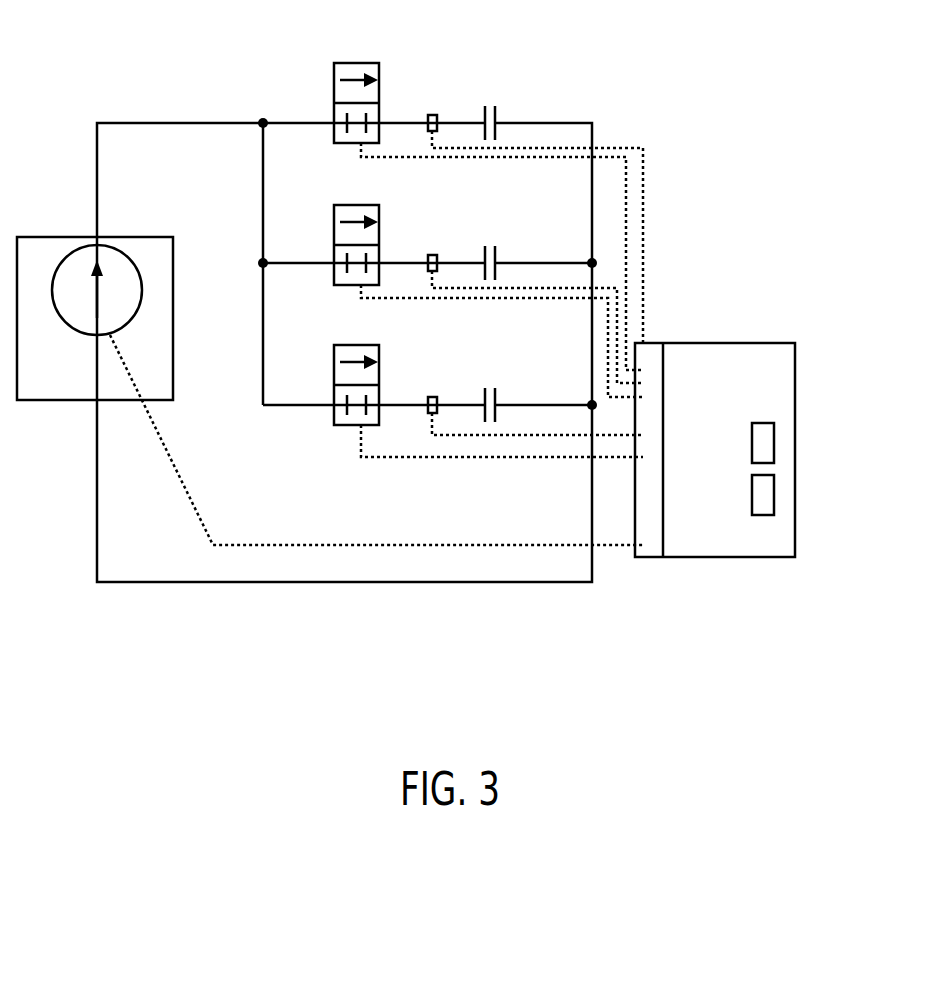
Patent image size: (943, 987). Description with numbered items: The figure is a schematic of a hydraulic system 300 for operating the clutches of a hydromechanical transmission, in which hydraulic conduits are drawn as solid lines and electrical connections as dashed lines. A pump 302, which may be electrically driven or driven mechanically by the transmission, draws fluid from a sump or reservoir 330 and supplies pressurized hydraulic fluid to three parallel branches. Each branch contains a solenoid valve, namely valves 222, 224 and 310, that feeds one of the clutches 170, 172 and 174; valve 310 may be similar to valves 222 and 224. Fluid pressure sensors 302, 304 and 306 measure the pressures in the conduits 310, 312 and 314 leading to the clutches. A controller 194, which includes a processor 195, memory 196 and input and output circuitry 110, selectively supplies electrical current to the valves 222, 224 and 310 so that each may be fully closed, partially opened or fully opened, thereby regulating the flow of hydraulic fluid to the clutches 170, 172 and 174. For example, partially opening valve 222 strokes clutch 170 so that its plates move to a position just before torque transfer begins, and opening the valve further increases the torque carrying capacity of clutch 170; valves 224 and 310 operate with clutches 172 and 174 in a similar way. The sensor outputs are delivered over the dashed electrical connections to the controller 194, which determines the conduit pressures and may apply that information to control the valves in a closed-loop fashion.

The hydraulic system 300 is at (672, 121).
The input and output circuitry 110 is at (659, 348).
The clutch 170 is at (506, 110).
The clutch 172 is at (506, 258).
The clutch 174 is at (506, 400).
The controller 194 is at (770, 548).
The processor 195 is at (770, 497).
The memory 196 is at (765, 442).
The solenoid valve 222 is at (378, 68).
The solenoid valve 224 is at (380, 211).
The pump 302 is at (120, 252).
The fluid pressure sensor 304 is at (432, 252).
The fluid pressure sensor 306 is at (432, 394).
The solenoid valve 310 is at (380, 351).
The conduit 312 is at (470, 262).
The conduit 314 is at (470, 404).
The sump or reservoir 330 is at (173, 333).